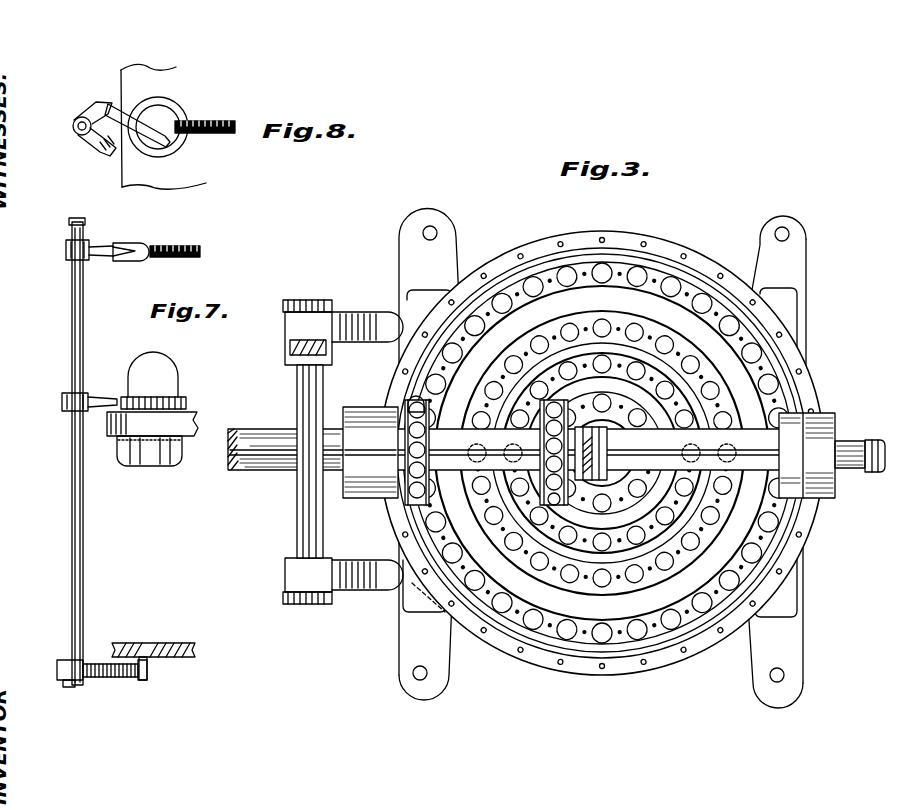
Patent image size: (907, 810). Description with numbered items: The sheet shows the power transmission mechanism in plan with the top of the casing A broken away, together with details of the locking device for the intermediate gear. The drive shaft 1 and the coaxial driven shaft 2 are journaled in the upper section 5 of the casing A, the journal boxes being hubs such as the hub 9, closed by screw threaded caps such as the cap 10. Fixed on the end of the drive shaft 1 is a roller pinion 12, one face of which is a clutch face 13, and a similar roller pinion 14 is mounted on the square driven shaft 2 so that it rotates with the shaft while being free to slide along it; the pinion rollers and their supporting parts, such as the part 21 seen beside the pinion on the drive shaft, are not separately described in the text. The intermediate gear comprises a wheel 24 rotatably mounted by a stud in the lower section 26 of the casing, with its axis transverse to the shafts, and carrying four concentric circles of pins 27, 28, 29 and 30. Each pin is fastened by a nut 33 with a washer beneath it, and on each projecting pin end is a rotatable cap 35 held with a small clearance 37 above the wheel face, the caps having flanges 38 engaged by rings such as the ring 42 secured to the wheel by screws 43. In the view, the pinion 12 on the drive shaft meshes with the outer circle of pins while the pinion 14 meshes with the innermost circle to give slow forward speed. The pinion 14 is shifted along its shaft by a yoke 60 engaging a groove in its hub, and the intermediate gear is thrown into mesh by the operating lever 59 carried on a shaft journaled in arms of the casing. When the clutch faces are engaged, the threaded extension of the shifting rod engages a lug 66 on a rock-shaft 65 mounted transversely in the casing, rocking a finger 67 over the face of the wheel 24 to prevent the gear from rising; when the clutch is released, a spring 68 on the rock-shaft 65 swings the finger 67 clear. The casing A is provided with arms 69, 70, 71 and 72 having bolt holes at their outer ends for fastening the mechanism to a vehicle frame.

In FIG. 3, the drive shaft 1 is at (270, 452).
In FIG. 3, the driven shaft 2 is at (706, 452).
In FIG. 3, the upper section of casing 5 is at (672, 254).
In FIG. 3, the hub 9 is at (818, 435).
In FIG. 3, the screw threaded cap 10 is at (370, 452).
In FIG. 3, the roller pinion 12 is at (430, 430).
In FIG. 3, the clutch face 13 is at (430, 488).
In FIG. 3, the roller pinion 14 is at (566, 410).
In FIG. 3, the ball race 21 is at (440, 410).
In FIG. 8, the wheel 24 is at (158, 82).
In FIG. 7, the wheel 24 is at (180, 425).
In FIG. 3, the wheel 24 is at (598, 303).
In FIG. 7, the lower section of casing 26 is at (150, 643).
In FIG. 3, the circle of pins 27 is at (628, 588).
In FIG. 3, the circle of pins 28 is at (662, 572).
In FIG. 3, the circle of pins 29 is at (690, 556).
In FIG. 3, the circle of pins 30 is at (700, 503).
In FIG. 7, the nut 33 is at (176, 462).
In FIG. 8, the cap 35 is at (160, 118).
In FIG. 7, the cap 35 is at (168, 378).
In FIG. 3, the cap 35 is at (560, 300).
In FIG. 7, the clearance 37 is at (196, 414).
In FIG. 8, the flange 38 is at (182, 148).
In FIG. 7, the flange 38 is at (186, 400).
In FIG. 3, the ring 42 is at (712, 380).
In FIG. 3, the screw 43 is at (702, 345).
In FIG. 3, the operating lever 59 is at (290, 351).
In FIG. 3, the yoke 60 is at (572, 480).
In FIG. 8, the rock-shaft 65 is at (80, 133).
In FIG. 7, the rock-shaft 65 is at (75, 458).
In FIG. 3, the rock-shaft 65 is at (408, 405).
In FIG. 8, the lug 66 is at (132, 152).
In FIG. 7, the lug 66 is at (100, 245).
In FIG. 8, the finger 67 is at (156, 82).
In FIG. 7, the finger 67 is at (100, 398).
In FIG. 3, the finger 67 is at (414, 403).
In FIG. 8, the spring 68 is at (107, 153).
In FIG. 7, the spring 68 is at (98, 678).
In FIG. 3, the arm 69 is at (405, 245).
In FIG. 3, the arm 70 is at (441, 648).
In FIG. 3, the arm 71 is at (800, 250).
In FIG. 3, the arm 72 is at (803, 650).
In FIG. 3, the casing A is at (822, 520).